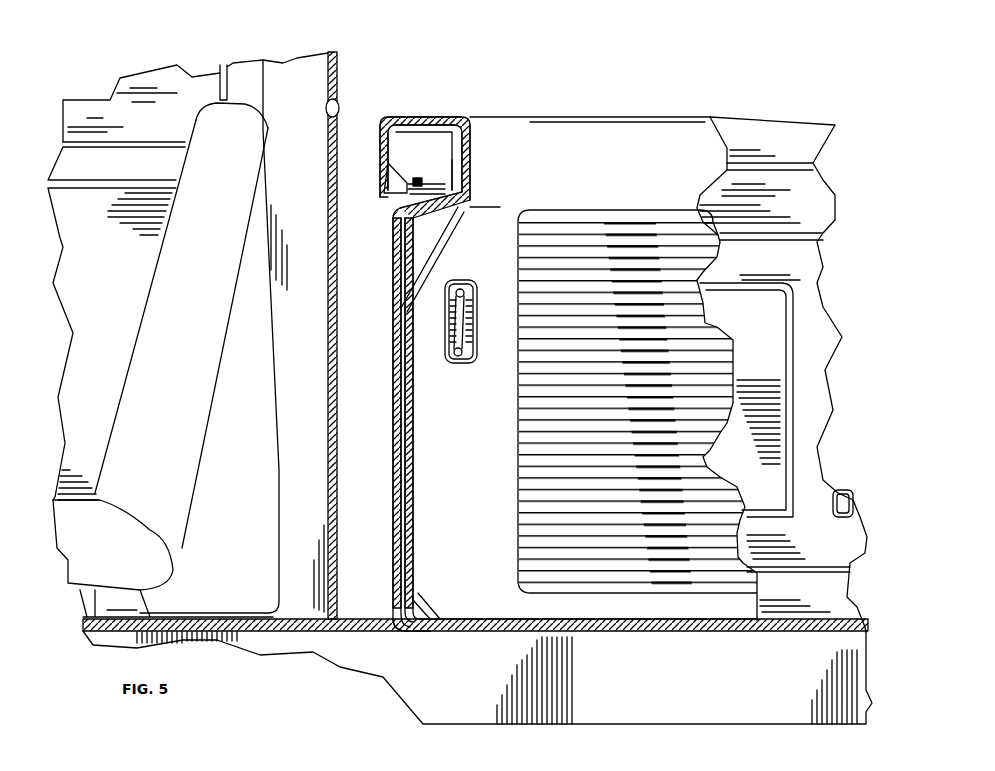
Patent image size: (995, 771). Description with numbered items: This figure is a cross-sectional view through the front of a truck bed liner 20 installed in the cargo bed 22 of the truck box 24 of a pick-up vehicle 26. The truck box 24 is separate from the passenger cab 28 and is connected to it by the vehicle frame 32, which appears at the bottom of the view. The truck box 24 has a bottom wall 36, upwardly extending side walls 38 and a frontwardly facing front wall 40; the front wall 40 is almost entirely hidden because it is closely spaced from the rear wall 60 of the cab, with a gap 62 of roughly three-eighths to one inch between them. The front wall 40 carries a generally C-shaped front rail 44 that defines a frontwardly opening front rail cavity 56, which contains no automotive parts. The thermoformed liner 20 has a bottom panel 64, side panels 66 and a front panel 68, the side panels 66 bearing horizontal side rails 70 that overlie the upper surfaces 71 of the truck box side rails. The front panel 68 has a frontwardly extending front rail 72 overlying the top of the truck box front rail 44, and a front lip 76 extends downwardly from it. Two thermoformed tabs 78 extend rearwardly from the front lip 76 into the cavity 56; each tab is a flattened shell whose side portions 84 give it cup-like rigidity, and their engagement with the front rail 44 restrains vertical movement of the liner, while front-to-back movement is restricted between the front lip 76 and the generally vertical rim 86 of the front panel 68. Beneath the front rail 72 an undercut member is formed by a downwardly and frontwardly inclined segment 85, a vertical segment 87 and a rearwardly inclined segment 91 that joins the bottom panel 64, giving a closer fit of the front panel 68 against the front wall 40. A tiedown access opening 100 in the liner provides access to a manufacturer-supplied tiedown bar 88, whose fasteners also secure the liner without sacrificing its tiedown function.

The truck bed liner 20 is at (599, 113).
The cargo bed 22 is at (791, 622).
The truck box 24 is at (691, 634).
The vehicle 26 is at (353, 81).
The passenger cab 28 is at (298, 60).
The vehicle frame 32 is at (283, 657).
The bottom wall 36 is at (515, 634).
The side wall 38 is at (754, 321).
The front wall 40 is at (396, 505).
The front rail 44 is at (427, 131).
The front rail cavity 56 is at (416, 178).
The cab rear wall 60 is at (338, 425).
The gap 62 is at (383, 122).
The bottom panel 64 is at (503, 619).
The side panel 66 is at (720, 480).
The front panel 68 is at (417, 437).
The side rail 70 is at (672, 115).
The upper surface 71 is at (770, 123).
The front rail 72 is at (447, 114).
The front lip 76 is at (380, 152).
The tab 78 is at (383, 188).
The side portion 84 is at (422, 182).
The inclined segment 85 is at (460, 227).
The vertical rim 86 is at (468, 178).
The vertical segment 87 is at (417, 390).
The tiedown bar 88 is at (474, 321).
The rearwardly extending inclined segment 91 is at (437, 590).
The tiedown access opening 100 is at (476, 281).